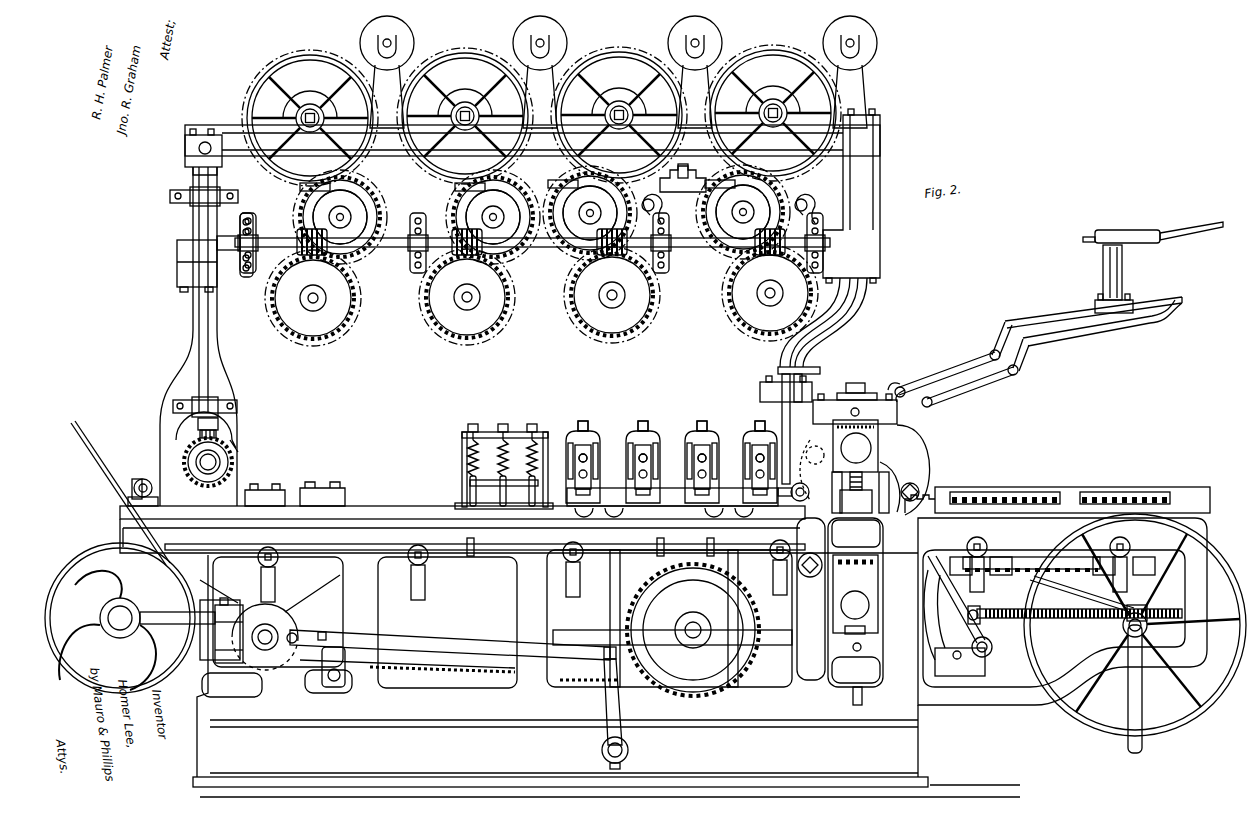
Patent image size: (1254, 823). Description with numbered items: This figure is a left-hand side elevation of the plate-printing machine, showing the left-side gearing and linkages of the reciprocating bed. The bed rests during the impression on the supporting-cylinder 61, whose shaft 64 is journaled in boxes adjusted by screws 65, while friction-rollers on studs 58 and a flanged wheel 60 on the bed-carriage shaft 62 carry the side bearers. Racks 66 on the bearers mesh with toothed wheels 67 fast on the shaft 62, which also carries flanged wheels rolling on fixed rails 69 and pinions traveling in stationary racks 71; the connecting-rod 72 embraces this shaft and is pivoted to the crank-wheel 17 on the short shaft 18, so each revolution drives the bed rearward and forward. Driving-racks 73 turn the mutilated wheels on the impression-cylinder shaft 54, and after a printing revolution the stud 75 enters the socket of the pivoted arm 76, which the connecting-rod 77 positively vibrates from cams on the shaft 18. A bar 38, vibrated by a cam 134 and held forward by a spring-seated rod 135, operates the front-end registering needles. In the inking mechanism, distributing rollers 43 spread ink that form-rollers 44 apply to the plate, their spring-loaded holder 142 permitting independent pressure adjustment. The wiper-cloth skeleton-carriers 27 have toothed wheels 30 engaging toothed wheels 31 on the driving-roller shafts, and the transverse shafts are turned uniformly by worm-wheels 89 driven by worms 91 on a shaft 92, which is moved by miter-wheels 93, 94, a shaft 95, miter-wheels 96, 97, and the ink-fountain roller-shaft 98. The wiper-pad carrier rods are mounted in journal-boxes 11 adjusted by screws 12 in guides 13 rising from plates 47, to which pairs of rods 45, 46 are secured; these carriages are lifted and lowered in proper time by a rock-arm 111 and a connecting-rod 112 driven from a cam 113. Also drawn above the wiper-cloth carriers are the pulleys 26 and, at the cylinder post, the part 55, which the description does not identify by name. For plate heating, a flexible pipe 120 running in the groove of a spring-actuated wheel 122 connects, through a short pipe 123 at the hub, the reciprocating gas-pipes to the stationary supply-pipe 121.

The journal-boxes 11 is at (593, 462).
The screws 12 is at (671, 417).
The guides 13 is at (598, 450).
The crank-wheel 17 is at (308, 608).
The short shaft 18 is at (274, 637).
The guide pulley 26 is at (618, 72).
The skeleton-carriers 27 is at (328, 108).
The toothed wheel 30 is at (429, 429).
The toothed wheels 31 is at (542, 214).
The bar 38 is at (921, 448).
The distributing rollers 43 is at (322, 494).
The form-rollers 44 is at (468, 490).
The rods 45 is at (738, 639).
The rods 46 is at (620, 639).
The plates 47 is at (672, 502).
The shaft 54 is at (855, 453).
The block 55 is at (857, 441).
The studs 58 is at (280, 542).
The flanged wheel 60 is at (648, 588).
The supporting-cylinder 61 is at (938, 615).
The shaft 62 is at (693, 620).
The shaft 64 is at (855, 594).
The screws 65 is at (852, 638).
The racks 66 is at (1017, 570).
The toothed wheels 67 is at (693, 626).
The fixed rails 69 is at (590, 680).
The stationary racks 71 is at (480, 664).
The connecting-rod 72 is at (447, 622).
The driving-racks 73 is at (1057, 500).
The stud or tooth 75 is at (813, 470).
The arm 76 is at (803, 497).
The connecting-rod 77 is at (672, 637).
The worm-wheels 89 is at (541, 295).
The worms 91 is at (300, 236).
The shaft 92 is at (532, 251).
The miter-wheel 93 is at (235, 242).
The miter-wheel 94 is at (204, 239).
The shaft 95 is at (203, 360).
The miter-wheel 96 is at (220, 430).
The miter-wheel 97 is at (228, 466).
The ink-fountain roller-shaft 98 is at (970, 590).
The rock-arm 111 is at (615, 708).
The connecting-rod 112 is at (450, 645).
The cam 113 is at (265, 637).
The flexible pipe 120 is at (1205, 712).
The supply-pipe 121 is at (1142, 703).
The wheel 122 is at (1135, 625).
The short pipe 123 is at (1062, 598).
The cam 134 is at (961, 653).
The spring-seated rod 135 is at (1075, 620).
The holder 142 is at (504, 487).